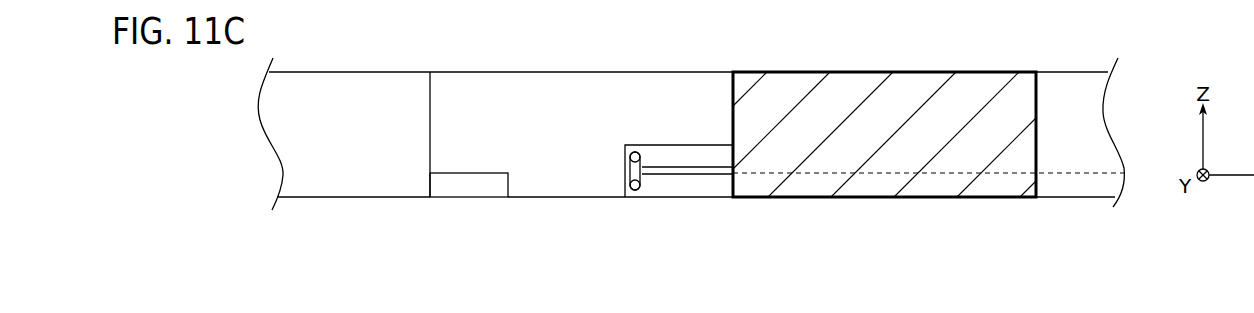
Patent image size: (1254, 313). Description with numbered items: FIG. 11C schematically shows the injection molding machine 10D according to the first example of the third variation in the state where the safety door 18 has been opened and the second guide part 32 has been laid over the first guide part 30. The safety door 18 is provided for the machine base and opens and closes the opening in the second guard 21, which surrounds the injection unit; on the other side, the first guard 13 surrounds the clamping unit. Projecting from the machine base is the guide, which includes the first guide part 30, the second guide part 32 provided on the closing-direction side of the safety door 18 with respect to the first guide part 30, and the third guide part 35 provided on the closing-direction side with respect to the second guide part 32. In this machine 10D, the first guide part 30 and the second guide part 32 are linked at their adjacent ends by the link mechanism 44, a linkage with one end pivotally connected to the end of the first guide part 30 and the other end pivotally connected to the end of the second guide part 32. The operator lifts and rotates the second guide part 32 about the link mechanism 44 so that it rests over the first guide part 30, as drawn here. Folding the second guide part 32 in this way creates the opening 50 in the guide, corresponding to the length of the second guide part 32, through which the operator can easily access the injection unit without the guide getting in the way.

The first guard 13 is at (333, 185).
The third guide part 35 is at (457, 185).
The opening 50 is at (558, 179).
The second guide part 32 is at (671, 157).
The first guide part 30 is at (671, 185).
The link mechanism 44 is at (628, 169).
The injection molding machine 10D is at (879, 58).
The safety door 18 is at (765, 88).
The second guard 21 is at (1075, 185).